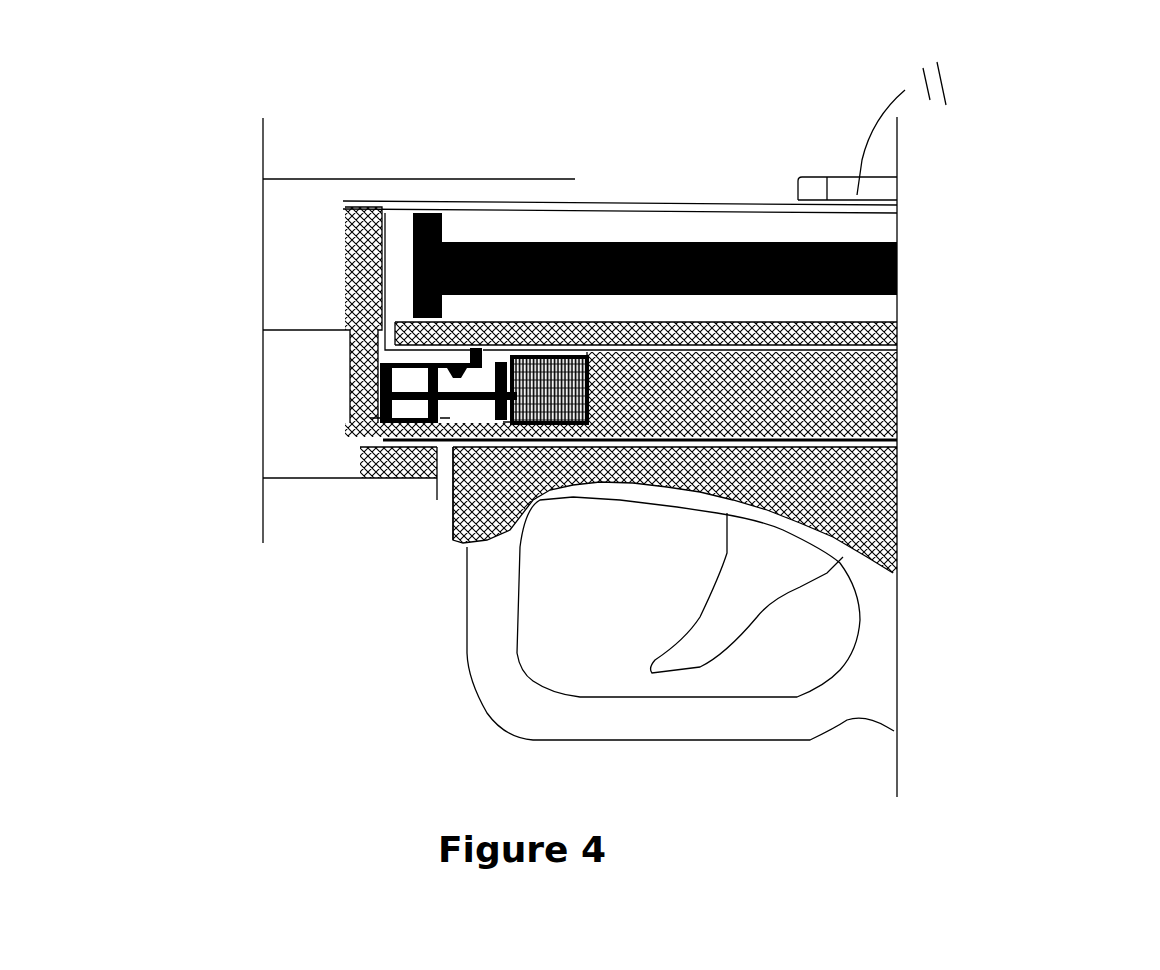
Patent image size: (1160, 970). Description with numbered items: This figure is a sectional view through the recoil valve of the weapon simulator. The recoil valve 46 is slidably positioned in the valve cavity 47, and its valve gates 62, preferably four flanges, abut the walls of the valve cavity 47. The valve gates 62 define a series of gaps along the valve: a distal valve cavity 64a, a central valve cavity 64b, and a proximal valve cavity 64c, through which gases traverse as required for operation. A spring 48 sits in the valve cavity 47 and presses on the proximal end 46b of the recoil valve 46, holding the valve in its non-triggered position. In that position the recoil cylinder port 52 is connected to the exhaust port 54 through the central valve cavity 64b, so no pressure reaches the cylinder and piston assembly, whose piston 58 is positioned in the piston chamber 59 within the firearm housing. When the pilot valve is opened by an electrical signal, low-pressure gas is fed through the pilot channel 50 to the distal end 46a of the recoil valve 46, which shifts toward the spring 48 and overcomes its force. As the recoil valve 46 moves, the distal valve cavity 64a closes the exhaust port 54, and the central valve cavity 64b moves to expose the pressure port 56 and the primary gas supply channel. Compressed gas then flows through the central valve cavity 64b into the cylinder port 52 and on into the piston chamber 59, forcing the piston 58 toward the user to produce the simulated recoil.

The recoil valve 46 is at (378, 415).
The distal end of recoil valve 46a is at (378, 372).
The proximal end of recoil valve 46b is at (527, 362).
The valve cavity 47 is at (472, 362).
The spring 48 is at (578, 422).
The pilot channel 50 is at (890, 443).
The recoil cylinder port 52 is at (383, 332).
The exhaust port 54 is at (433, 497).
The pressure port 56 is at (522, 363).
The piston 58 is at (467, 233).
The piston chamber 59 is at (403, 240).
The valve gates 62 is at (443, 420).
The distal valve cavity 64a is at (413, 382).
The central valve cavity 64b is at (478, 410).
The proximal valve cavity 64c is at (508, 422).